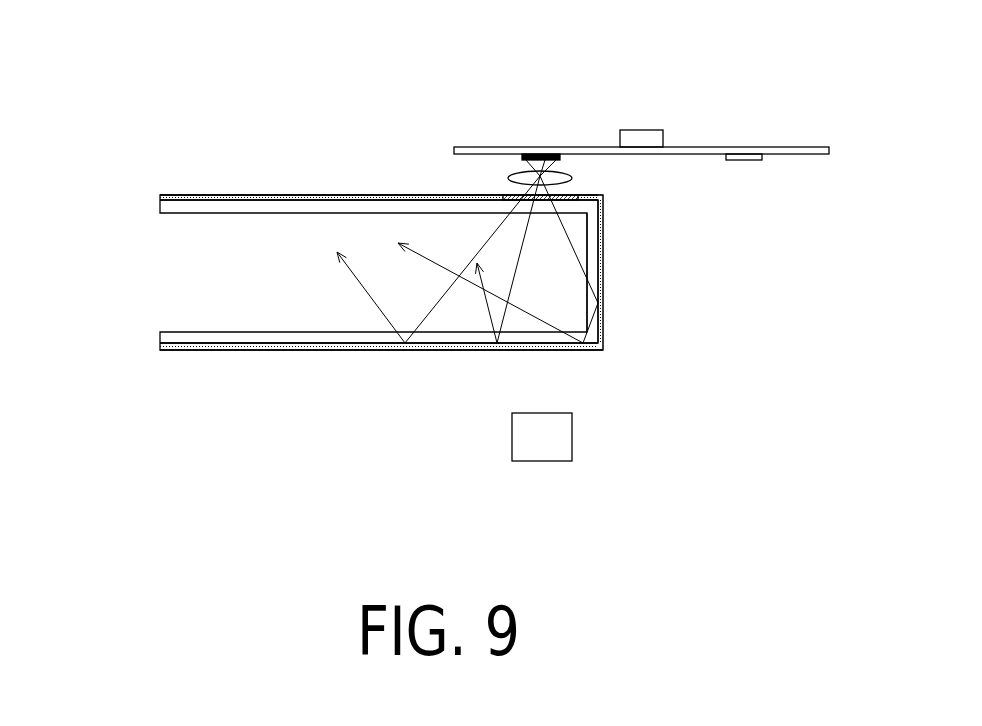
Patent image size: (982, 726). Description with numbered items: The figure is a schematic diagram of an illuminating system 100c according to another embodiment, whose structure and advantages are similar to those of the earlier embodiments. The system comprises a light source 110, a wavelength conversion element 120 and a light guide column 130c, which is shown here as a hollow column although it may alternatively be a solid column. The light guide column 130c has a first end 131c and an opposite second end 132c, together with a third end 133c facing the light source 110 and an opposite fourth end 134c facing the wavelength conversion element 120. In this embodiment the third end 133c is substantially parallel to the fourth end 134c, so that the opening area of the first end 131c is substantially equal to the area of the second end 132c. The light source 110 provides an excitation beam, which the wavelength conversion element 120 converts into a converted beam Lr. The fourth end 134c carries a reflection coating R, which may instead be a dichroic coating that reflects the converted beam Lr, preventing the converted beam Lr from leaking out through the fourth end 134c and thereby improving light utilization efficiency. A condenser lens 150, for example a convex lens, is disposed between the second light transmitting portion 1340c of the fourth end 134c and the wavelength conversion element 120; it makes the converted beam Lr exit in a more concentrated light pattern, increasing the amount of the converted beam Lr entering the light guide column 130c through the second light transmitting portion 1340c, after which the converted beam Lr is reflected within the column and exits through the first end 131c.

The illuminating system 100c is at (107, 27).
The light source 110 is at (553, 435).
The wavelength conversion element 120 is at (803, 120).
The light guide column 130c is at (148, 205).
The first end 131c is at (162, 272).
The second end 132c is at (580, 237).
The third end 133c is at (332, 332).
The fourth end 134c is at (322, 215).
The second light transmitting portion 1340c is at (575, 213).
The condenser lens 150 is at (568, 179).
The reflection coating R is at (237, 195).
The converted beam Lr is at (380, 318).